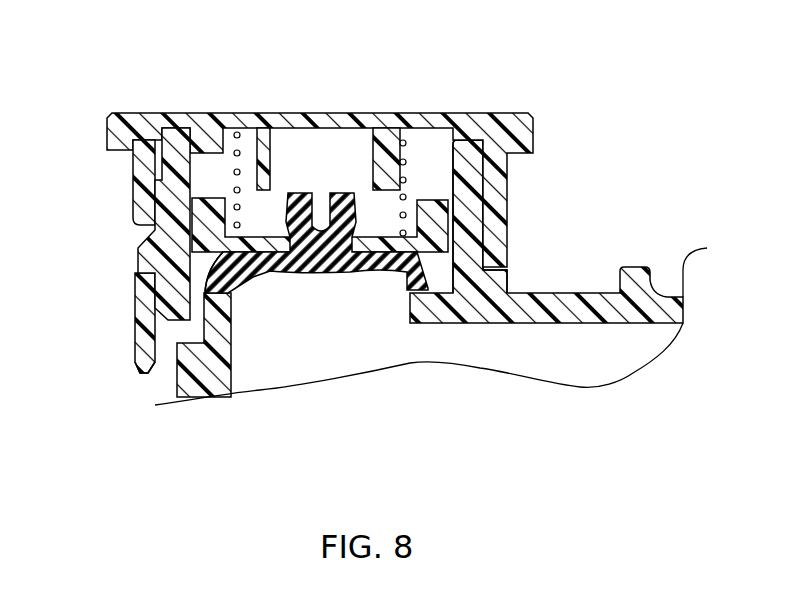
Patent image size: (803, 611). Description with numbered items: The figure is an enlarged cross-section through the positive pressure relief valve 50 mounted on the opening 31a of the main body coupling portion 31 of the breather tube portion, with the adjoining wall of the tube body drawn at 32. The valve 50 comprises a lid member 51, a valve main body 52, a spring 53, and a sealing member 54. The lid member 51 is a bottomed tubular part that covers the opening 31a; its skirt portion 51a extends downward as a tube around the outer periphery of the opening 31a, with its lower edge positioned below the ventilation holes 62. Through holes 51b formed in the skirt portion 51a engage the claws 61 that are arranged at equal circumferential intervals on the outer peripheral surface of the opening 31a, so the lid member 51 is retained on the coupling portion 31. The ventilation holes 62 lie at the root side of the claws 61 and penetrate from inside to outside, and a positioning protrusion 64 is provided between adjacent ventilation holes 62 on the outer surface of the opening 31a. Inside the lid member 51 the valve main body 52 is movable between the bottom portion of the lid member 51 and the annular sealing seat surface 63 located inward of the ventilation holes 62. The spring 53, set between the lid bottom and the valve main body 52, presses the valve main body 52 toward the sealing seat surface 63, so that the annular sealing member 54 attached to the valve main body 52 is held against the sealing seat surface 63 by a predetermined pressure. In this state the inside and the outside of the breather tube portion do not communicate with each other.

The positive pressure relief valve 50 is at (331, 200).
The lid member 51 is at (300, 113).
The skirt portion 51a is at (140, 323).
The through holes 51b is at (145, 228).
The valve main body 52 is at (210, 210).
The spring 53 is at (253, 130).
The sealing member 54 is at (295, 272).
The main body coupling portion 31 is at (187, 380).
The opening 31a is at (453, 178).
The body flange 32 is at (597, 297).
The claws 61 is at (143, 258).
The ventilation holes 62 is at (140, 360).
The sealing seat surface 63 is at (213, 292).
The positioning protrusion 64 is at (502, 282).